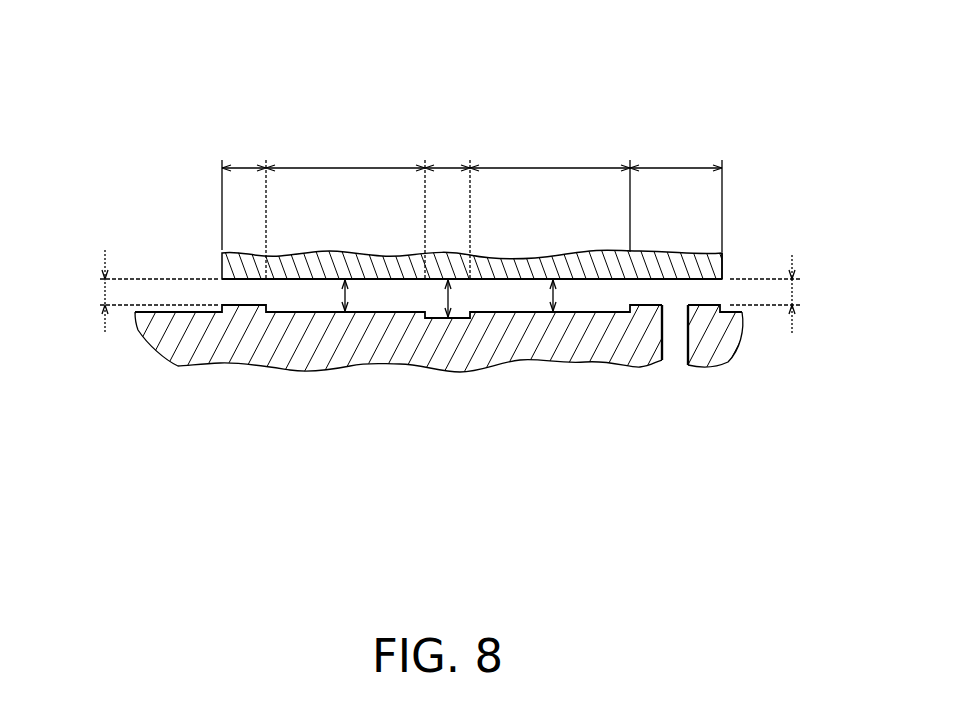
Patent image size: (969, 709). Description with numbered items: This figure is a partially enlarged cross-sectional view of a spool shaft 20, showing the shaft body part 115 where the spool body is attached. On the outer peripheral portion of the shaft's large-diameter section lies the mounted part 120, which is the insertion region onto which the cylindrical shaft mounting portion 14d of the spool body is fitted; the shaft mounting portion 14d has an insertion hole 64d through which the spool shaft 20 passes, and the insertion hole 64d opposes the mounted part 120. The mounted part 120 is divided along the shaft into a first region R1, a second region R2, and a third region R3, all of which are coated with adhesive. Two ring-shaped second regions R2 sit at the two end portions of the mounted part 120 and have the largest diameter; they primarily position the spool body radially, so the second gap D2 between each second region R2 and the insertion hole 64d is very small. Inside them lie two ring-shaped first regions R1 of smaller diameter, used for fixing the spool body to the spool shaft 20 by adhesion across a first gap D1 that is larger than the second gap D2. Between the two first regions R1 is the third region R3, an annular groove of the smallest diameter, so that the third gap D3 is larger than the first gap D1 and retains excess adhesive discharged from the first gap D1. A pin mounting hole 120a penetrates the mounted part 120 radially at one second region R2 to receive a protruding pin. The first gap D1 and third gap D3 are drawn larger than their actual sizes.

The spool shaft 20 is at (308, 383).
The shaft body part 115 is at (190, 352).
The insertion hole 64d is at (673, 293).
The mounted part 120 is at (730, 100).
The shaft mounting portion 14d is at (242, 249).
The pin mounting hole 120a is at (723, 271).
The first region R1 is at (448, 205).
The second region R2 is at (472, 192).
The third region R3 is at (447, 205).
The first gap D1 is at (347, 297).
The second gap D2 is at (449, 291).
The third gap D3 is at (454, 298).